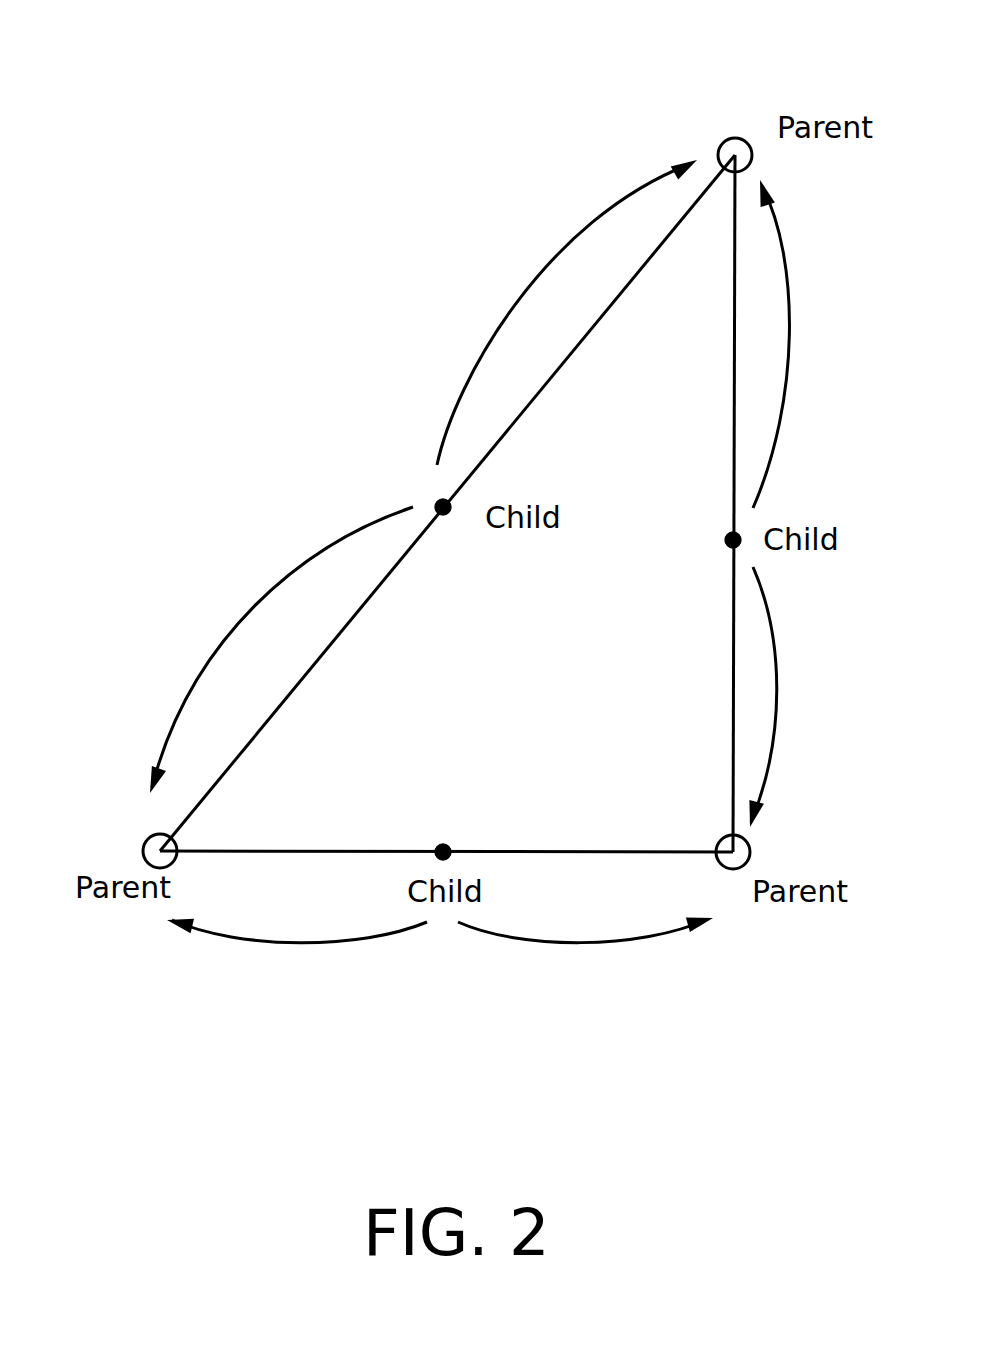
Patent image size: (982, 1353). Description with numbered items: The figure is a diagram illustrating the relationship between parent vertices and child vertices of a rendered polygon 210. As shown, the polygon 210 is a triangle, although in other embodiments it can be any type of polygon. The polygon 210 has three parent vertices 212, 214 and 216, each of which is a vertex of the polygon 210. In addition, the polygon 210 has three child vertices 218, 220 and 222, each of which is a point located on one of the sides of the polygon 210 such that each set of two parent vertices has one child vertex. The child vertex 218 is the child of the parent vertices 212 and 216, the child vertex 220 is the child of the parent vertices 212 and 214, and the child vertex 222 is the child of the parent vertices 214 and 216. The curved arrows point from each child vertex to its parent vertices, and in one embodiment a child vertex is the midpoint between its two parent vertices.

The polygon 210 is at (735, 377).
The parent vertex 212 is at (727, 142).
The parent vertex 214 is at (745, 845).
The parent vertex 216 is at (150, 838).
The child vertex 218 is at (440, 500).
The child vertex 220 is at (740, 535).
The child vertex 222 is at (446, 847).